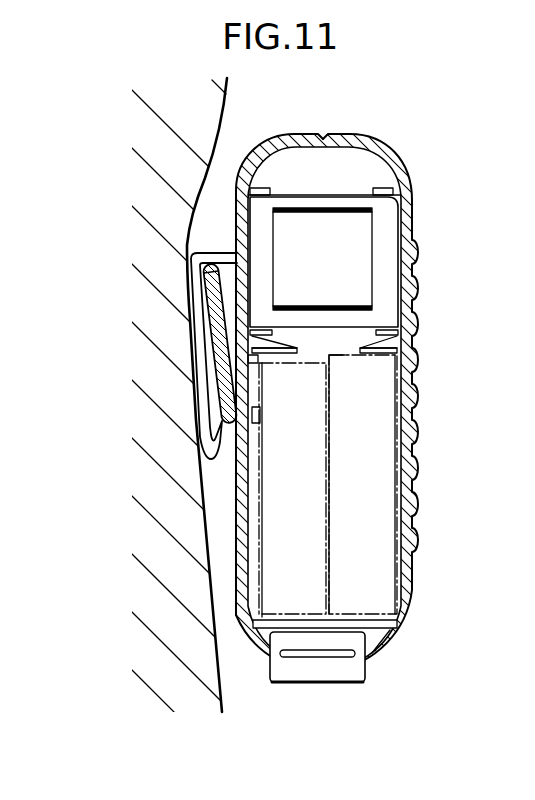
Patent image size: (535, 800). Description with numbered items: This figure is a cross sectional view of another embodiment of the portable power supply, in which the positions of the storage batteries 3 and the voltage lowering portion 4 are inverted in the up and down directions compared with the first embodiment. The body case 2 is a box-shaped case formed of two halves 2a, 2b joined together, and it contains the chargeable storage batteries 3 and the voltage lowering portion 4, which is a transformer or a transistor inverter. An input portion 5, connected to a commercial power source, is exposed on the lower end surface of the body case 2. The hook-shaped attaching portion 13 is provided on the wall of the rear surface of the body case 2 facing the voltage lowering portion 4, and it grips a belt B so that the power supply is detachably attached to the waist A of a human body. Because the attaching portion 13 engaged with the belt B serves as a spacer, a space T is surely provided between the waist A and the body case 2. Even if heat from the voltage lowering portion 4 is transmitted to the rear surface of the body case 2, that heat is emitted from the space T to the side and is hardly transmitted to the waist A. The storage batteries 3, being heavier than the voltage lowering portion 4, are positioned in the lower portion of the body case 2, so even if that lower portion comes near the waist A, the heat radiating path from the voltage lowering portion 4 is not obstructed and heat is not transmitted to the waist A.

The body case 2 is at (347, 126).
The half of body case 2a is at (384, 142).
The half of body case 2b is at (277, 139).
The storage batteries 3 is at (378, 562).
The voltage lowering portion 4 is at (350, 276).
The input portion 5 is at (327, 683).
The attaching portion 13 is at (188, 311).
The waist A is at (222, 708).
The belt B is at (220, 383).
The space T is at (233, 293).